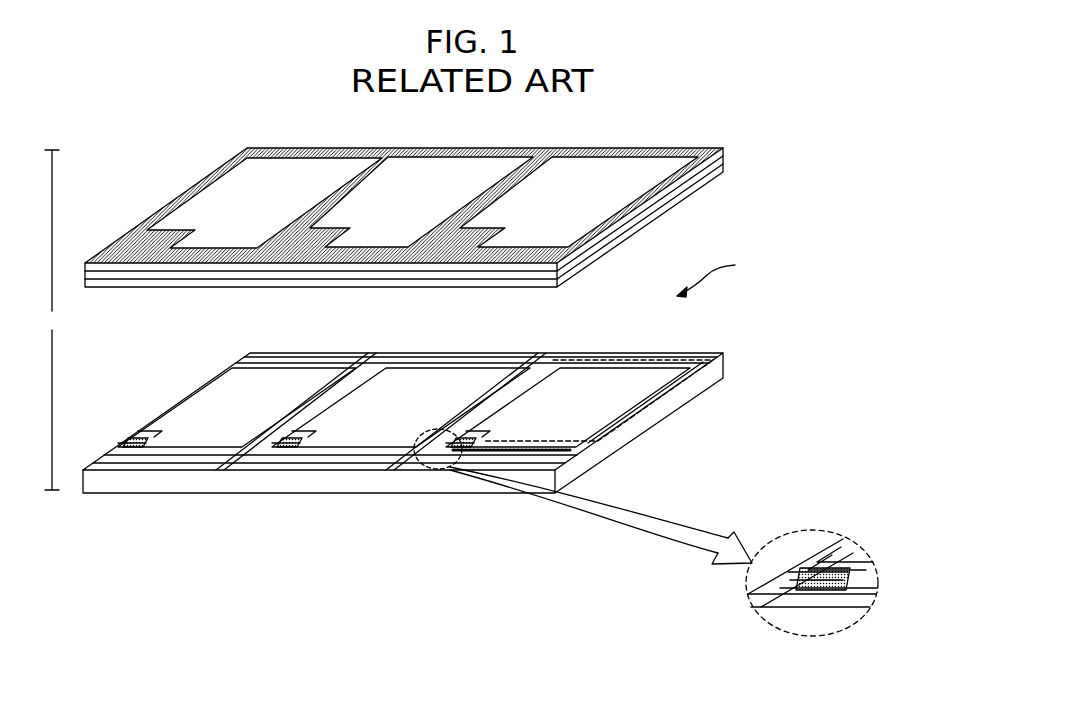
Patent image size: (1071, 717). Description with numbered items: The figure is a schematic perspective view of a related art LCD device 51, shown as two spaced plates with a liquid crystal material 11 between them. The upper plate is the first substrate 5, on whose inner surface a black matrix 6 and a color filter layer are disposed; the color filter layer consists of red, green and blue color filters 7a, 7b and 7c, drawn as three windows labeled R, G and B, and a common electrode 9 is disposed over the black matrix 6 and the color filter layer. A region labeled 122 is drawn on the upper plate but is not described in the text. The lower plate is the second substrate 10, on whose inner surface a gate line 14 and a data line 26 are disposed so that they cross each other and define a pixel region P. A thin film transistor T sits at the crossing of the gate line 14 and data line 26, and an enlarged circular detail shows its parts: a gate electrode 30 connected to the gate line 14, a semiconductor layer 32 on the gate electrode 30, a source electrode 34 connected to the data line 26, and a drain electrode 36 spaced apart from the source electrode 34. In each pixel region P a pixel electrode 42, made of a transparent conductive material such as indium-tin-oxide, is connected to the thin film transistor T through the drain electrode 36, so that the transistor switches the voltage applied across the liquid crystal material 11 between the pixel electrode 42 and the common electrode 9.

The first substrate 5 is at (703, 168).
The black matrix 6 is at (685, 187).
The common electrode 9 is at (679, 203).
The red color filter 7a is at (324, 163).
The green color filter 7b is at (478, 163).
The blue color filter 7c is at (640, 163).
The black matrix 122 is at (131, 239).
The LCD device 51 is at (52, 320).
The liquid crystal material 11 is at (719, 276).
The second substrate 10 is at (708, 382).
The gate line 14 is at (417, 464).
The data line 26 is at (541, 355).
The pixel electrode 42 is at (613, 424).
The pixel region P is at (663, 392).
The thin film transistor T is at (745, 582).
The gate electrode 30 is at (857, 558).
The semiconductor layer 32 is at (838, 570).
The source electrode 34 is at (801, 568).
The drain electrode 36 is at (863, 568).